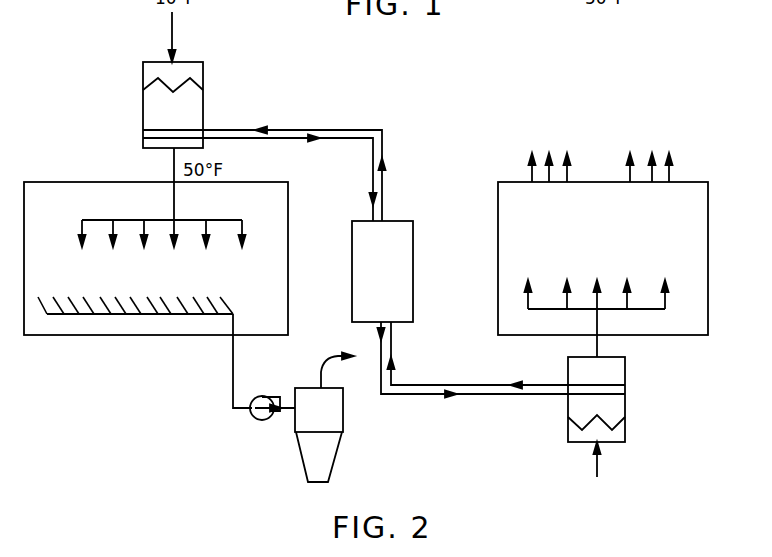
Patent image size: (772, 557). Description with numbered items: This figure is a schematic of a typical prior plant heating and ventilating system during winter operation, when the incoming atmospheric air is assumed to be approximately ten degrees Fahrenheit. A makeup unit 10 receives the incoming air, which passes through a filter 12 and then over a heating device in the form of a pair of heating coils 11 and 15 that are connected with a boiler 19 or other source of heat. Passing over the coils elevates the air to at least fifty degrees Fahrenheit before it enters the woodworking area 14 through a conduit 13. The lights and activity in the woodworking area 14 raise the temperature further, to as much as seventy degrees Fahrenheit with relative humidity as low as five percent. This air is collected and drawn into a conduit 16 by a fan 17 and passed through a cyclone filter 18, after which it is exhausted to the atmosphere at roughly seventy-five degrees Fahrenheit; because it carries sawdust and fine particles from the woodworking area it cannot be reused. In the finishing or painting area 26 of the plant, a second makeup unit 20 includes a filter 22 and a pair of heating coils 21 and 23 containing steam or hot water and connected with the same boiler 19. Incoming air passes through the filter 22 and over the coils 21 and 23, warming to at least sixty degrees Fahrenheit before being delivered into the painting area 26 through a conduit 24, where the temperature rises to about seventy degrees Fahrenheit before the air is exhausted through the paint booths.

The makeup unit 10 is at (163, 104).
The heating coil 11 is at (185, 129).
The filter 12 is at (198, 80).
The conduit 13 is at (176, 199).
The woodworking area 14 is at (80, 282).
The heating coil 15 is at (210, 139).
The conduit 16 is at (233, 370).
The fan 17 is at (258, 396).
The cyclone filter 18 is at (307, 413).
The boiler 19 is at (382, 271).
The second makeup unit 20 is at (607, 415).
The heating coil 21 is at (472, 397).
The filter 22 is at (620, 427).
The heating coil 23 is at (465, 383).
The conduit 24 is at (599, 321).
The painting area 26 is at (612, 230).